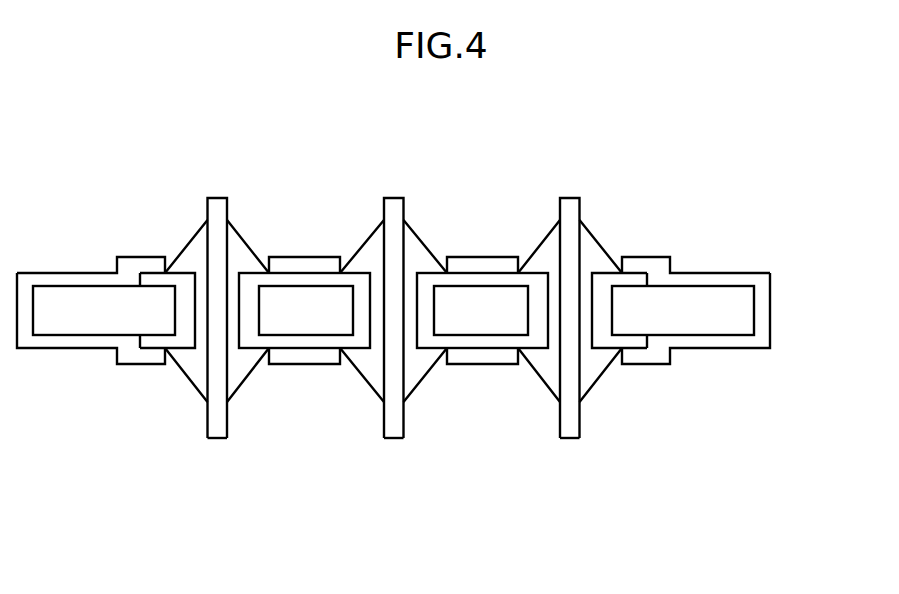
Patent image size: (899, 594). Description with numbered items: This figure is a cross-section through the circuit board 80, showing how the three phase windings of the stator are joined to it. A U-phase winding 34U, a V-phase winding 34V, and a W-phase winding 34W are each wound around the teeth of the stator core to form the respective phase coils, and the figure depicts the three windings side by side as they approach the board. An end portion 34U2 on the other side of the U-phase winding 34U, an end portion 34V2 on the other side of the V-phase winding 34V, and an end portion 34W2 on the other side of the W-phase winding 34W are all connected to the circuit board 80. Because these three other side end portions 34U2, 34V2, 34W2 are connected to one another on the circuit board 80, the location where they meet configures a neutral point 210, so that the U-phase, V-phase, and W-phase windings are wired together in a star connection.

The circuit board 80 is at (770, 310).
The neutral point 210 is at (152, 407).
The U-phase winding 34U is at (228, 188).
The other side end portion of the U-phase winding 34U2 is at (217, 438).
The V-phase winding 34V is at (408, 186).
The other side end portion of the V-phase winding 34V2 is at (393, 438).
The W-phase winding 34W is at (584, 187).
The other side end portion of the W-phase winding 34W2 is at (568, 438).